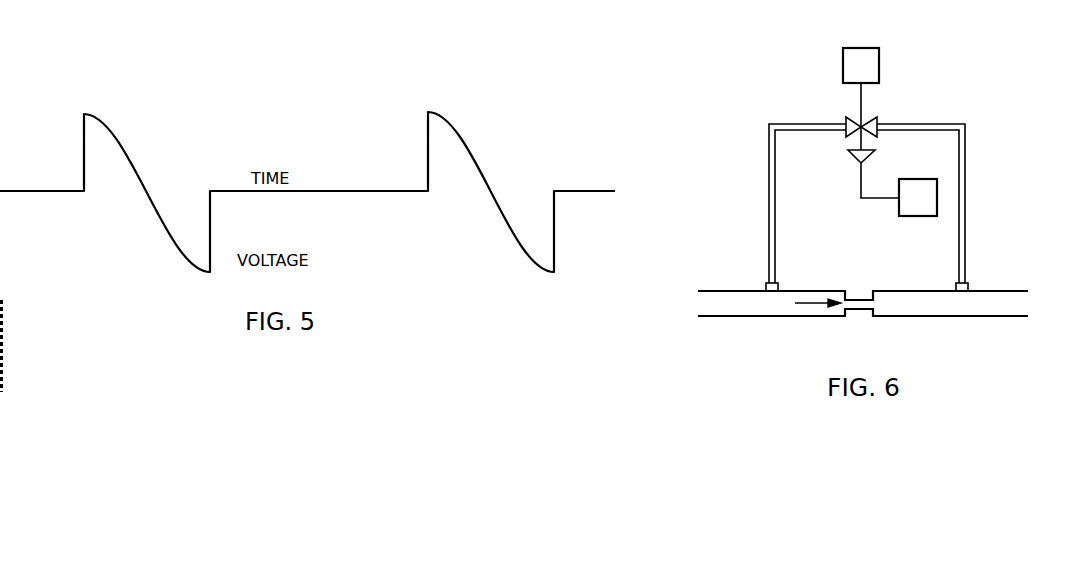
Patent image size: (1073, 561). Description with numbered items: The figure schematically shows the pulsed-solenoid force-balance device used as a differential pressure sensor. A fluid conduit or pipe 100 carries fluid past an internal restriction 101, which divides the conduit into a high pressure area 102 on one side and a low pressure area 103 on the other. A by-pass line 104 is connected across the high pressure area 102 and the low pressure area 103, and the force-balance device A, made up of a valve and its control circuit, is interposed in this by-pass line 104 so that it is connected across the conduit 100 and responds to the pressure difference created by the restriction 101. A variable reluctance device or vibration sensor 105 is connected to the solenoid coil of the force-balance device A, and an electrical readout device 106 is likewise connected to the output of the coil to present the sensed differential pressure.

The fluid conduit 100 is at (966, 316).
The internal restriction 101 is at (861, 305).
The high pressure area 102 is at (712, 303).
The low pressure area 103 is at (1005, 300).
The by-pass line 104 is at (966, 204).
The variable reluctance device 105 is at (879, 55).
The electrical readout device 106 is at (925, 181).
The force-balance device A is at (841, 110).